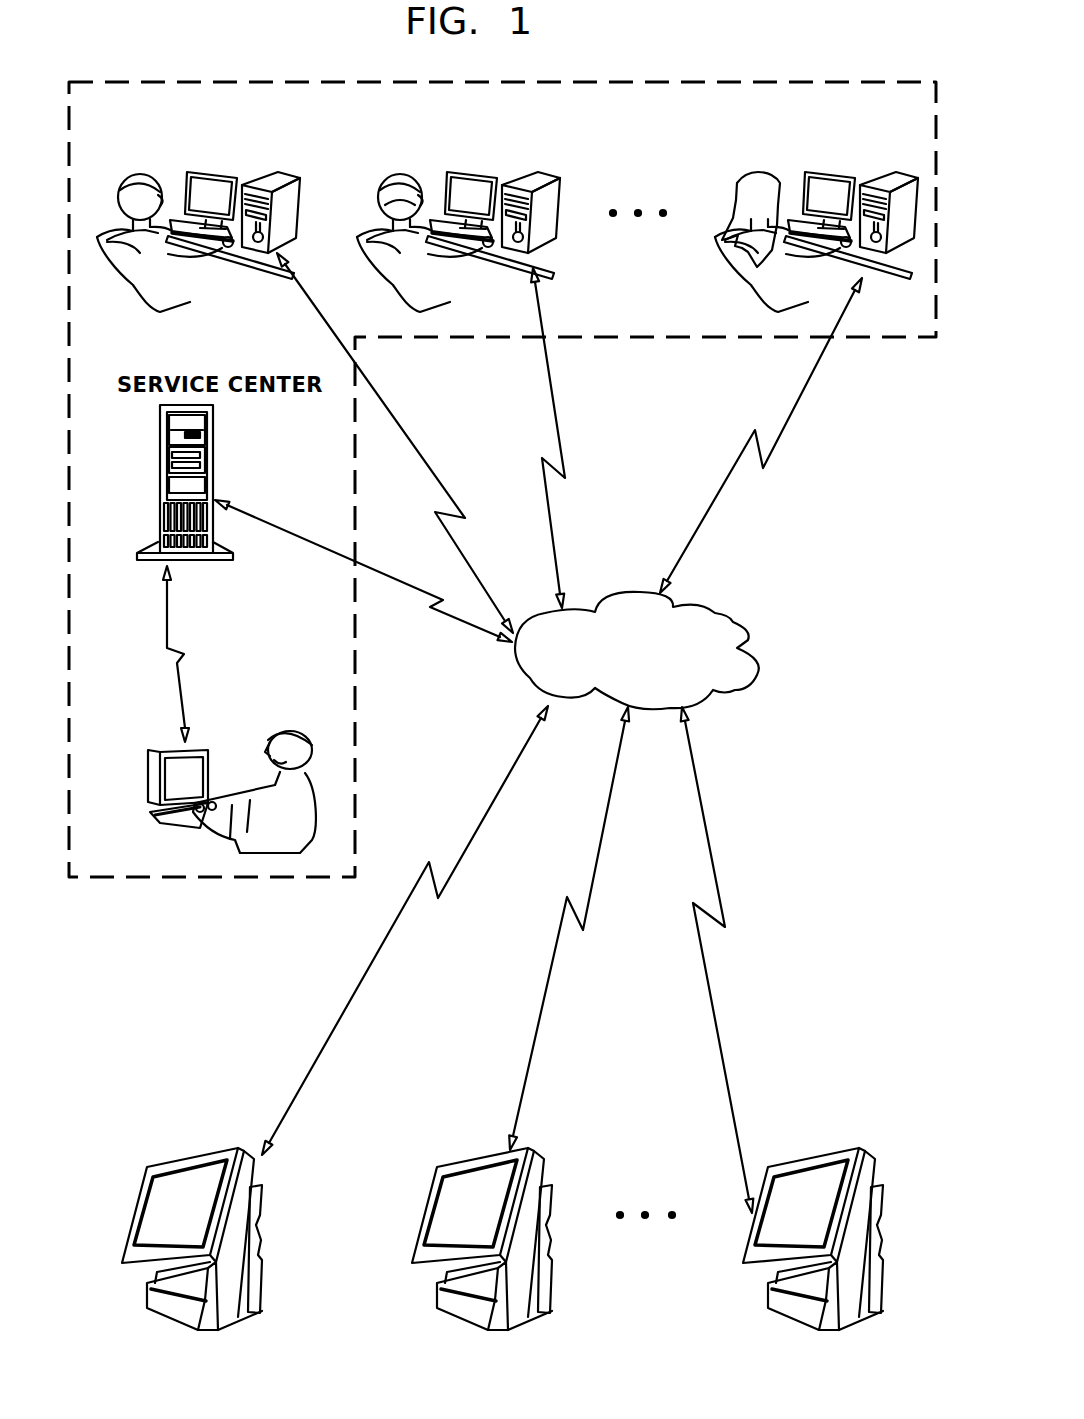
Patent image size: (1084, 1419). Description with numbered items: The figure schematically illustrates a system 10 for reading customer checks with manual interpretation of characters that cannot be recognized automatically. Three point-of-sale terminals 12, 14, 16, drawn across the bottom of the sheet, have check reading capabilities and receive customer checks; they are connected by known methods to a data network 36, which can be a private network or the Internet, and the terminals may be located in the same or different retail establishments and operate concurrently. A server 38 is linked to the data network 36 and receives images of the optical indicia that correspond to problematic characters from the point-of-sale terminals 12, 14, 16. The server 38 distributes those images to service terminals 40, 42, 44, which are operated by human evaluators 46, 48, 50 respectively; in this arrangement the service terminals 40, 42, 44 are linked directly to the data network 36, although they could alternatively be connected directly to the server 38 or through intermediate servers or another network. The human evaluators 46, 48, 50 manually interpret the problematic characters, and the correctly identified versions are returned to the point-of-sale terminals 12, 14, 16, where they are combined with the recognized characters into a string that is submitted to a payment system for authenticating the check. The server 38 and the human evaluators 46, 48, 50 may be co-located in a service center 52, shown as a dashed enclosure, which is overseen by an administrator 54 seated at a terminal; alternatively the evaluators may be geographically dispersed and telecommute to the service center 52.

The system 10 is at (773, 757).
The point-of-sale terminal 12 is at (172, 1168).
The point-of-sale terminal 14 is at (482, 1221).
The point-of-sale terminal 16 is at (813, 1217).
The data network 36 is at (747, 633).
The server 38 is at (214, 462).
The service terminal 40 is at (268, 178).
The service terminal 42 is at (493, 206).
The service terminal 44 is at (851, 206).
The human evaluator 46 is at (138, 182).
The human evaluator 48 is at (425, 223).
The human evaluator 50 is at (783, 222).
The service center 52 is at (222, 82).
The administrator 54 is at (303, 735).